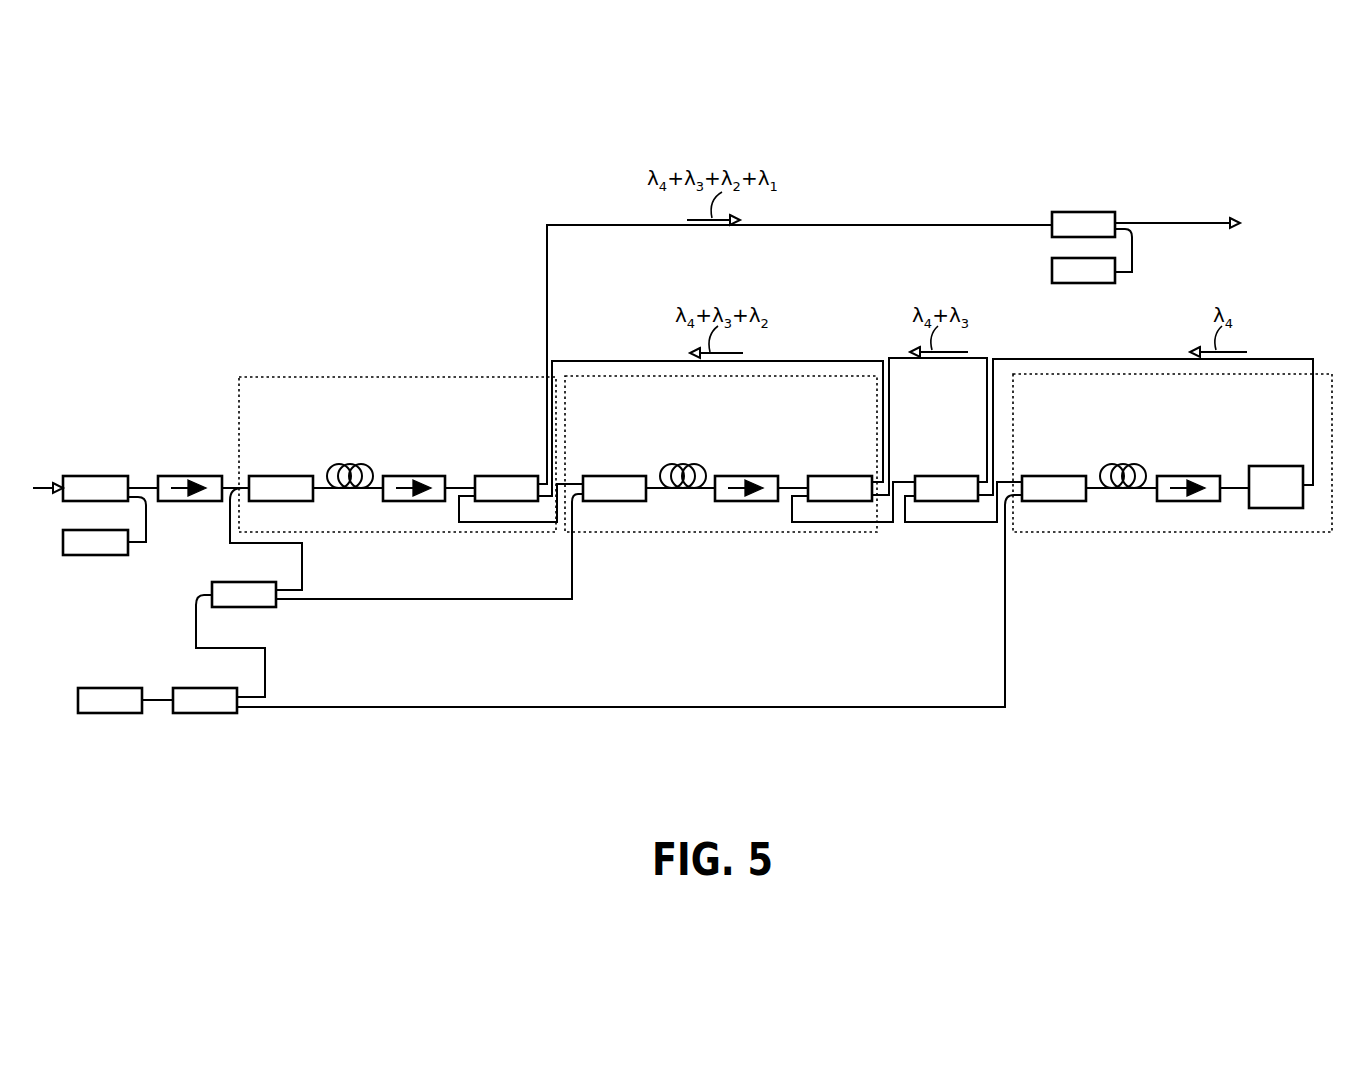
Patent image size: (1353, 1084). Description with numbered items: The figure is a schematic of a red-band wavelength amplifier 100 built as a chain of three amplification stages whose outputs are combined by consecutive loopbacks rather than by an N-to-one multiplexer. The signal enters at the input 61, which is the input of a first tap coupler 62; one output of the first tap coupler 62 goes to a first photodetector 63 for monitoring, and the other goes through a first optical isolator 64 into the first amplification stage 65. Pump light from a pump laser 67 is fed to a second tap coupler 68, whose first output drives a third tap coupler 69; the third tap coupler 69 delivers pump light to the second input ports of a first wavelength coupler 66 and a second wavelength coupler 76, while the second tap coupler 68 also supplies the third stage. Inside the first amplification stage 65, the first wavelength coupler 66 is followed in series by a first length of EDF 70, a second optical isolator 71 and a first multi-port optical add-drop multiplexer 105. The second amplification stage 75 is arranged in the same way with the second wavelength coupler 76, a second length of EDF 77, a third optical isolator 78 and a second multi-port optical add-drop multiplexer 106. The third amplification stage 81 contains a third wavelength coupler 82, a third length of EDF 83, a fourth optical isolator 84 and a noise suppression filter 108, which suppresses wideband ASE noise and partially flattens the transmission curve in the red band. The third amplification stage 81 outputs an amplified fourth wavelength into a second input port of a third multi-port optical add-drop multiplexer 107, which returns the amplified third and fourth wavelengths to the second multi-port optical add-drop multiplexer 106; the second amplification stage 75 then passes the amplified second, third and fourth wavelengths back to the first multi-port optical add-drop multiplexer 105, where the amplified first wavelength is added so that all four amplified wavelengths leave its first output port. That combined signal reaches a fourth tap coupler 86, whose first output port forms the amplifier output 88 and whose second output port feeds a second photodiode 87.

The multistage optical amplifier system 100 is at (274, 232).
The input 61 is at (38, 484).
The first tap coupler 62 is at (93, 475).
The first photodetector 63 is at (97, 556).
The first optical isolator 64 is at (185, 475).
The first amplification stage 65 is at (394, 534).
The first wavelength coupler 66 is at (278, 475).
The pump laser 67 is at (106, 714).
The second tap coupler 68 is at (203, 714).
The third tap coupler 69 is at (240, 581).
The first length of EDF 70 is at (348, 464).
The second optical isolator 71 is at (410, 475).
The second amplification stage 75 is at (718, 534).
The second wavelength coupler 76 is at (612, 475).
The second length of EDF 77 is at (683, 464).
The third optical isolator 78 is at (747, 475).
The third amplification stage 81 is at (1170, 534).
The third wavelength coupler 82 is at (1052, 475).
The third length of EDF 83 is at (1123, 464).
The fourth optical isolator 84 is at (1187, 475).
The fourth tap coupler 86 is at (1080, 211).
The second photodiode 87 is at (1082, 284).
The output 88 is at (1190, 220).
The first multi-port optical add-drop multiplexer 105 is at (502, 475).
The second multi-port optical add-drop multiplexer 106 is at (836, 475).
The third multi-port optical add-drop multiplexer 107 is at (943, 475).
The noise suppression filter 108 is at (1274, 465).